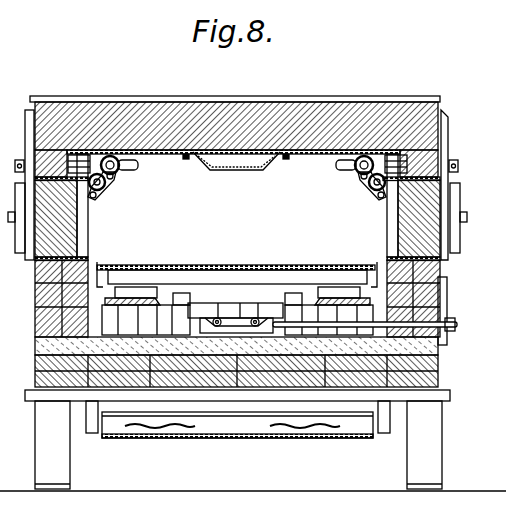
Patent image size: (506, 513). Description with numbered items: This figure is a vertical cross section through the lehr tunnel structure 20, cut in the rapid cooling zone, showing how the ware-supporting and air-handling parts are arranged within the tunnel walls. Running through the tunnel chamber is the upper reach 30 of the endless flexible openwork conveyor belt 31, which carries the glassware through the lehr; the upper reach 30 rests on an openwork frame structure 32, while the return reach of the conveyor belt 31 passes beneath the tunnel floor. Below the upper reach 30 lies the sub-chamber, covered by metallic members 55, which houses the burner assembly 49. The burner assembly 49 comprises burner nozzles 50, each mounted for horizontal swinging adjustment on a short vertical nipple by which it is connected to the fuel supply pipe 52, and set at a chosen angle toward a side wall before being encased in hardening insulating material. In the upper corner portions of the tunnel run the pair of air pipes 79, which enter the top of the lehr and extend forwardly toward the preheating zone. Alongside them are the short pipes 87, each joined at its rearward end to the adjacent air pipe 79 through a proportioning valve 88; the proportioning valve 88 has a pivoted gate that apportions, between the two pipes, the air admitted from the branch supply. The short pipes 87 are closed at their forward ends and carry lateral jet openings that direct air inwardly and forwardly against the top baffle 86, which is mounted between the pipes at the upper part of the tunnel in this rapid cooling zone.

The lehr tunnel structure 20 is at (448, 141).
The upper reach of conveyor belt 30 is at (190, 265).
The endless flexible openwork conveyor belt 31 is at (214, 440).
The openwork frame structure 32 is at (215, 272).
The burner assembly 49 is at (246, 316).
The burner nozzle 50 is at (215, 318).
The fuel supply pipe 52 is at (458, 329).
The metallic members 55 is at (136, 290).
The air pipe 79 is at (101, 192).
The top baffle 86 is at (252, 172).
The short pipe 87 is at (121, 172).
The proportioning valve 88 is at (112, 184).